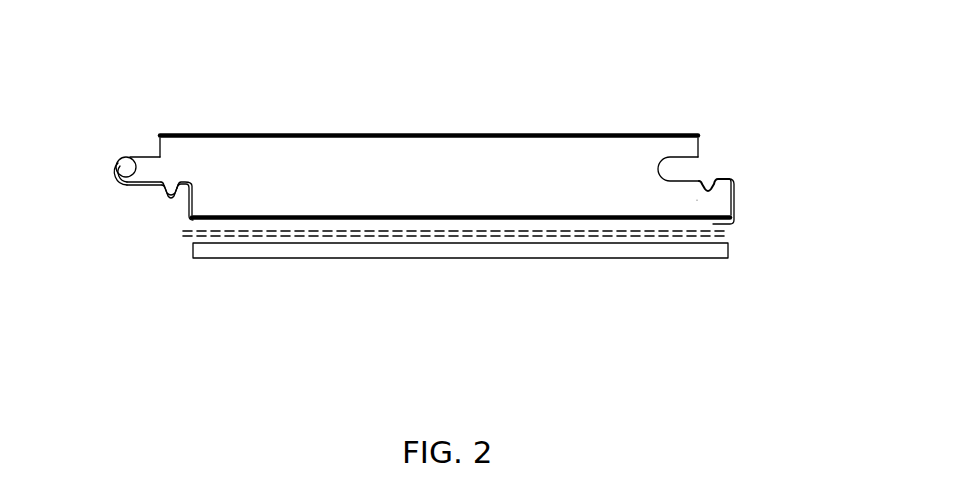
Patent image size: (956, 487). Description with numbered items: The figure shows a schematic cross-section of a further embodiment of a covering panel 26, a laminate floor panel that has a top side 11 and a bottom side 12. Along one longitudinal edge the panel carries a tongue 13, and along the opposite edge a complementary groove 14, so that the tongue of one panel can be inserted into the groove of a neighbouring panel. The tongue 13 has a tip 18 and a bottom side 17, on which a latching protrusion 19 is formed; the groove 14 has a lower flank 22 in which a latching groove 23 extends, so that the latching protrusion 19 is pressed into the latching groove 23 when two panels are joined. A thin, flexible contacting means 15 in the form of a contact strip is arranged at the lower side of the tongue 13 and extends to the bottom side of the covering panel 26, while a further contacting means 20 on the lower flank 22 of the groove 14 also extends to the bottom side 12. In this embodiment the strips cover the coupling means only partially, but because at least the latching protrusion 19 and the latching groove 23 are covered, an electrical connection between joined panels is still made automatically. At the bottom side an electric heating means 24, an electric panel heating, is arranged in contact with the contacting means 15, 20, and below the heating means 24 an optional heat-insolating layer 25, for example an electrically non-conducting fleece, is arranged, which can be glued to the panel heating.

The top side 11 is at (222, 133).
The bottom side 12 is at (555, 216).
The tongue 13 is at (138, 173).
The groove 14 is at (680, 172).
The contacting means 15 is at (148, 185).
The bottom side of the tongue 17 is at (147, 182).
The tip of the tongue 18 is at (120, 167).
The latching protrusion 19 is at (168, 195).
The further contacting means 20 is at (735, 212).
The lower flank 22 is at (697, 200).
The latching groove 23 is at (732, 180).
The electric heating means 24 is at (265, 232).
The heat-insolating layer 25 is at (347, 252).
The covering panel 26 is at (452, 120).